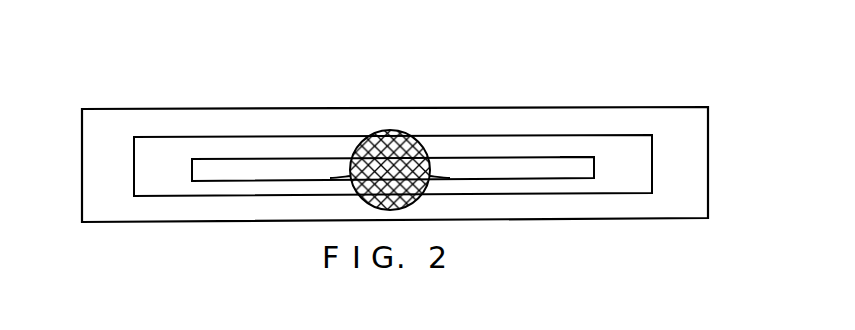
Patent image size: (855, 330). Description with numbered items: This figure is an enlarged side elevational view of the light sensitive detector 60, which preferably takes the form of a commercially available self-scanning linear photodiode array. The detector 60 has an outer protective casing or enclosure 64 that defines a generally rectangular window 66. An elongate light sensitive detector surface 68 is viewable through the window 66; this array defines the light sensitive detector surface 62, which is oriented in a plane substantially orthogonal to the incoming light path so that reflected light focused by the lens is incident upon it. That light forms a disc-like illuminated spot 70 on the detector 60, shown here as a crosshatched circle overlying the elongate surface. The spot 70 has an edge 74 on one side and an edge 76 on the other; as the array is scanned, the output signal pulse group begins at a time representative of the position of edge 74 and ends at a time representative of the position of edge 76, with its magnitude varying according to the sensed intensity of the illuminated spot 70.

The detector 60 is at (408, 149).
The light sensitive detector surface 62 is at (597, 155).
The outer protective casing 64 is at (149, 109).
The rectangular window 66 is at (162, 142).
The light sensitive detector surface 68 is at (585, 173).
The illuminated spot 70 is at (400, 131).
The edge of the illuminated spot 74 is at (350, 175).
The edge of the illuminated spot 76 is at (430, 175).